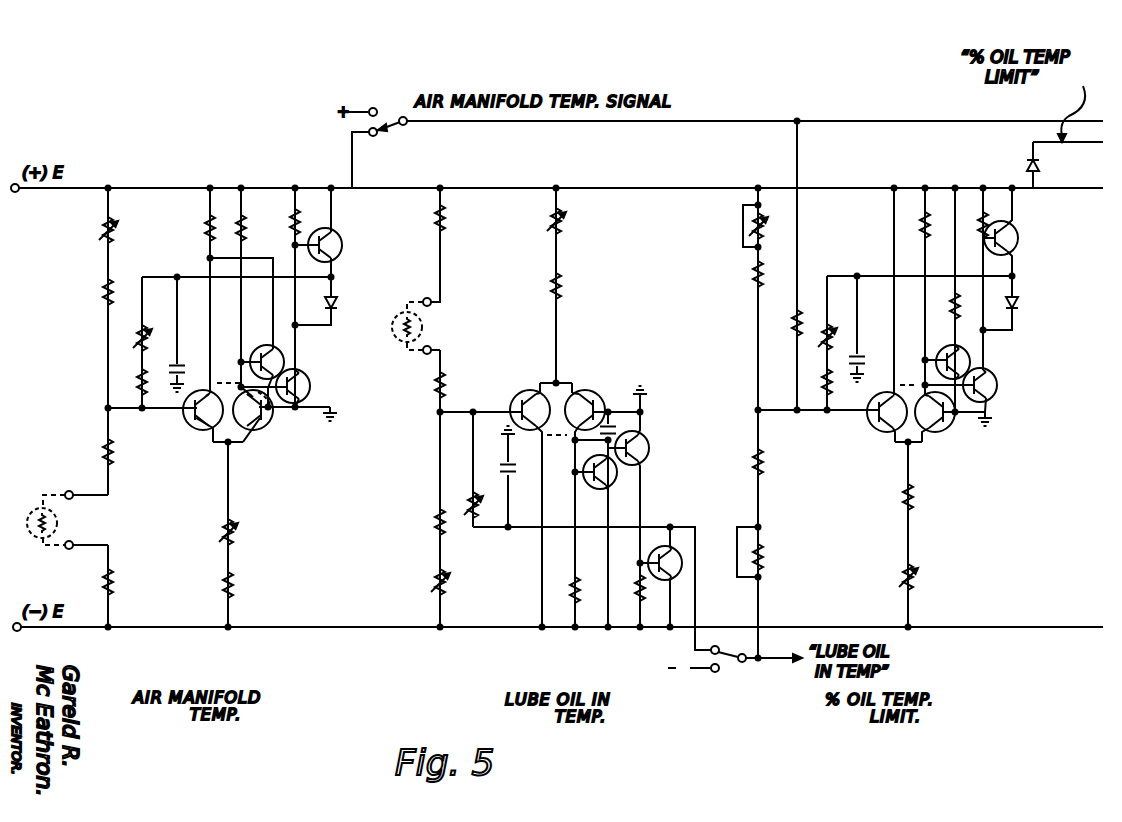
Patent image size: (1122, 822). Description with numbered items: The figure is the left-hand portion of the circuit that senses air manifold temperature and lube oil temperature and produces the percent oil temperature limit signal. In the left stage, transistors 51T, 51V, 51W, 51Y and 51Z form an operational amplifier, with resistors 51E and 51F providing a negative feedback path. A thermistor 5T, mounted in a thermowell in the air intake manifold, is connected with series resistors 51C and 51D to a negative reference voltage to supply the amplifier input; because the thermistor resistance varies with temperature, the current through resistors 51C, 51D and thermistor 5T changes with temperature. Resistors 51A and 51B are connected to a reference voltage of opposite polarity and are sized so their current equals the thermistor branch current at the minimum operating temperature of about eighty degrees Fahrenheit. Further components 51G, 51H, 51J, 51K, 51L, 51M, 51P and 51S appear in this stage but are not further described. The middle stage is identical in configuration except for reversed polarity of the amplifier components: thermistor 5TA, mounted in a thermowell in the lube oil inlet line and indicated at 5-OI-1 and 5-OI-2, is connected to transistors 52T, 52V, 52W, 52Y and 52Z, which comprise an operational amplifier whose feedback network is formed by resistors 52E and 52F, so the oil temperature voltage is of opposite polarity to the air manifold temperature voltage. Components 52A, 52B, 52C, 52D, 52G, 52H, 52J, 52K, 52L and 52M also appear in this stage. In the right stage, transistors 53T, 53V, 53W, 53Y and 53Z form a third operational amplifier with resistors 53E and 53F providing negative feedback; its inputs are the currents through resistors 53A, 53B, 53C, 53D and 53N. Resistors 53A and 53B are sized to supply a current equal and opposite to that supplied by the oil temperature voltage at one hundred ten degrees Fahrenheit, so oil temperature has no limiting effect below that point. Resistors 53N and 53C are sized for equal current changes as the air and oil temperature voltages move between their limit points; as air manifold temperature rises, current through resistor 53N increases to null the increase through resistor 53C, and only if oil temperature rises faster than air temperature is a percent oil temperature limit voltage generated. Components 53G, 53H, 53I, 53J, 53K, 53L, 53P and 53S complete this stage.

The resistor 51A is at (100, 230).
The resistor 51B is at (98, 299).
The series resistor 51C is at (100, 454).
The series resistor 51D is at (103, 580).
The thermistor 5T is at (58, 522).
The feedback resistor 51E is at (138, 337).
The feedback resistor 51F is at (138, 382).
The capacitor 51G is at (170, 398).
The resistor 51S is at (202, 224).
The resistor 51J is at (276, 214).
The resistor 51H is at (280, 248).
The transistor 51Z is at (336, 246).
The diode 51P is at (337, 307).
The transistor 51W is at (284, 357).
The transistor 51Y is at (304, 396).
The thermal coupling 51M is at (254, 416).
The transistor 51T is at (192, 434).
The transistor 51V is at (242, 434).
The variable resistor 51K is at (238, 538).
The resistor 51L is at (240, 592).
The resistor 52D is at (476, 223).
The thermistor 5TA is at (405, 302).
The terminal 5-OI-1 is at (433, 308).
The terminal 5-OI-2 is at (433, 356).
The resistor 52C is at (433, 396).
The resistor 52B is at (428, 524).
The variable resistor 52A is at (428, 578).
The feedback resistor 52F is at (440, 441).
The feedback resistor 52E is at (478, 526).
The capacitor 52G is at (500, 467).
The variable resistor 52L is at (565, 224).
The resistor 52K is at (565, 296).
The transistor 52T is at (508, 390).
The transistor 52V is at (608, 390).
The resistor 52H is at (564, 620).
The capacitor 52M is at (625, 408).
The transistor 52W is at (620, 483).
The transistor 52Y is at (650, 448).
The resistor 52J is at (635, 618).
The transistor 52Z is at (682, 566).
The input resistor 53A is at (736, 228).
The input resistor 53B is at (744, 276).
The input resistor 53N is at (780, 322).
The input resistor 53C is at (766, 470).
The input resistor 53D is at (766, 556).
The feedback resistor 53E is at (818, 320).
The feedback resistor 53F is at (815, 384).
The capacitor 53G is at (845, 402).
The resistor 53H is at (917, 232).
The resistor 53S is at (962, 306).
The resistor 53J is at (978, 208).
The diode 53I is at (1026, 162).
The transistor 53Z is at (1020, 238).
The diode 53P is at (1024, 310).
The transistor 53W is at (972, 358).
The transistor 53Y is at (1002, 386).
The transistor 53T is at (870, 432).
The transistor 53V is at (946, 432).
The resistor 53K is at (918, 502).
The variable resistor 53L is at (918, 584).